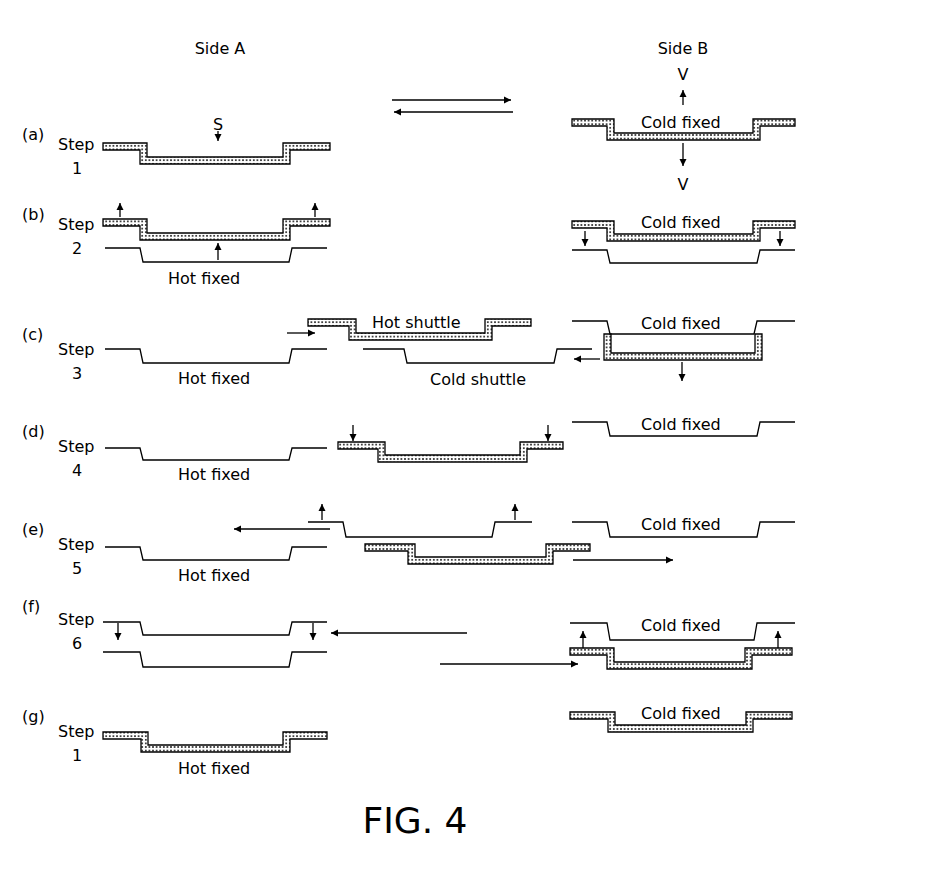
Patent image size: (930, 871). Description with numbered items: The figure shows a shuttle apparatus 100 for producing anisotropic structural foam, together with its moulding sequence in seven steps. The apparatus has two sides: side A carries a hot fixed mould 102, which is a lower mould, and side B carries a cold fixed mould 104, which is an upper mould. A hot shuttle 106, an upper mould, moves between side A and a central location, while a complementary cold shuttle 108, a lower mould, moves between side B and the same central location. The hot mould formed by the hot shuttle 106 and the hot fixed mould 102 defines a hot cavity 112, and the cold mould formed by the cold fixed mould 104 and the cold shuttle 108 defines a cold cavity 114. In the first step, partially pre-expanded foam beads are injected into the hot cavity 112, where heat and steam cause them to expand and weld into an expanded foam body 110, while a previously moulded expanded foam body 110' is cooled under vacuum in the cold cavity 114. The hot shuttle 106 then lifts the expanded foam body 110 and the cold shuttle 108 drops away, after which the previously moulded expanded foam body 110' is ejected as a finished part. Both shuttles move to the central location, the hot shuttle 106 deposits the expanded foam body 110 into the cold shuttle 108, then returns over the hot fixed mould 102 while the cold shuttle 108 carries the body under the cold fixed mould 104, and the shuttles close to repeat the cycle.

The shuttle apparatus 100 is at (554, 60).
The hot fixed mould 102 is at (224, 164).
The cold fixed mould 104 is at (738, 133).
The hot shuttle 106 is at (263, 143).
The cold shuttle 108 is at (647, 141).
The expanded foam body 110 is at (334, 399).
The previously moulded expanded foam body 110' is at (755, 459).
The hot cavity 112 is at (185, 143).
The cold cavity 114 is at (628, 133).